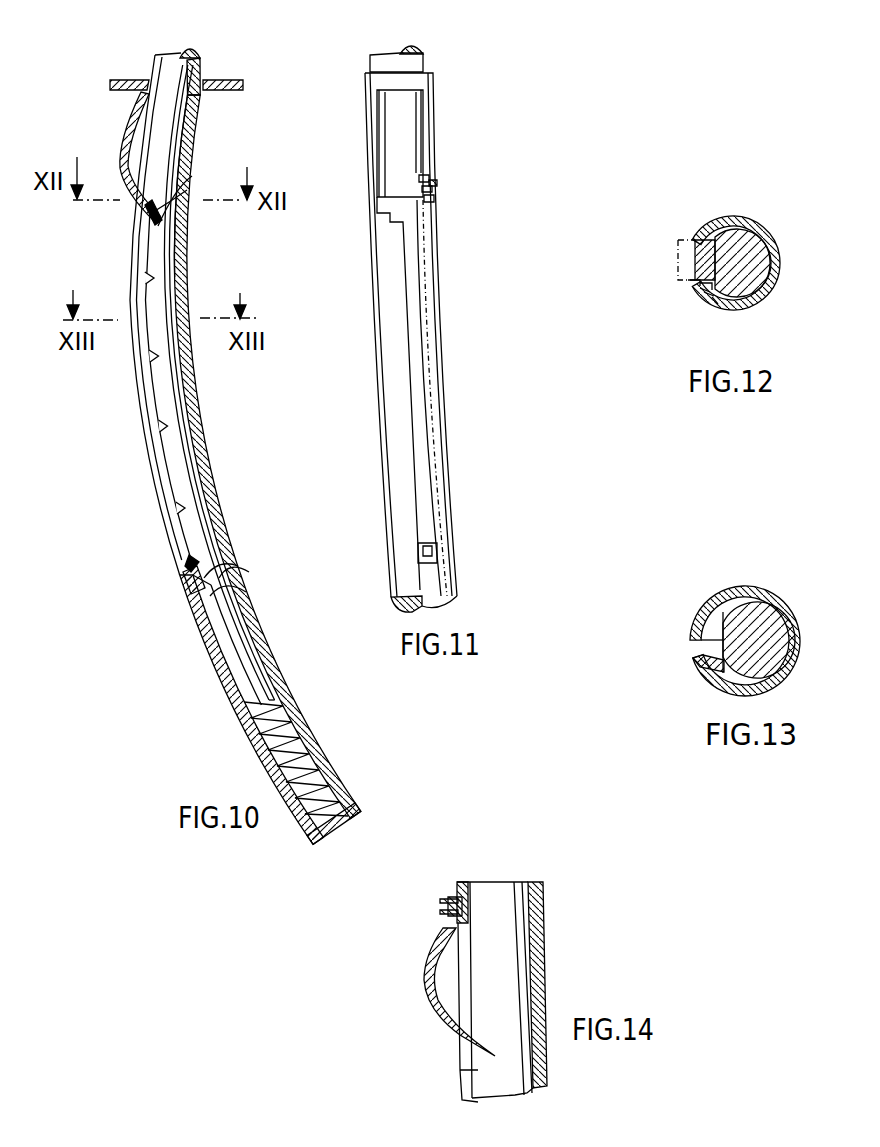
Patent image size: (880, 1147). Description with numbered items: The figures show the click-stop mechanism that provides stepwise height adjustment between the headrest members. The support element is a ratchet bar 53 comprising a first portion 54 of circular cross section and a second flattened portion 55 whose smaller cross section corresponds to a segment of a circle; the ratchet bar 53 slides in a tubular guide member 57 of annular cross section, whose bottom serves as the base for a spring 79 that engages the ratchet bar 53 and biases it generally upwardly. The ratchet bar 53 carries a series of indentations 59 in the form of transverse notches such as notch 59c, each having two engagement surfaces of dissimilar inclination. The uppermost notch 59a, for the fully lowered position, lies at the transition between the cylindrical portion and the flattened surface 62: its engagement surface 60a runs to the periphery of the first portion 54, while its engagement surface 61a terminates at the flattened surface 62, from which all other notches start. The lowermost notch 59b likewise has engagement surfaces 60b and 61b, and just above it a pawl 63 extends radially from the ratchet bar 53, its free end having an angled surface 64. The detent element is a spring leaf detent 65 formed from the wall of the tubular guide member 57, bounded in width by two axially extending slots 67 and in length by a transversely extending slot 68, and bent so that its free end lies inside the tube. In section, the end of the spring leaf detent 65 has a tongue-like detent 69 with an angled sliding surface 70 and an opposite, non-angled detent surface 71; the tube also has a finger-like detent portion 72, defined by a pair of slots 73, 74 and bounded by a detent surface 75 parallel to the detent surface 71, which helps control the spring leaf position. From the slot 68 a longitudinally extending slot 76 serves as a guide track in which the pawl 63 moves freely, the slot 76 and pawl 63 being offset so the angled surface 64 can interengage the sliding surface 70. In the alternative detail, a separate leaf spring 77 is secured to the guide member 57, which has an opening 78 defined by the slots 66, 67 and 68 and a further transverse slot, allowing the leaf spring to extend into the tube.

In FIG. 10, the ratchet bar 53 is at (150, 60).
In FIG. 11, the ratchet bar 53 is at (425, 60).
In FIG. 13, the ratchet bar 53 is at (706, 600).
In FIG. 10, the first portion 54 is at (170, 136).
In FIG. 10, the second flattened portion 55 is at (252, 661).
In FIG. 13, the second flattened portion 55 is at (755, 615).
In FIG. 10, the tubular guide member 57 is at (300, 718).
In FIG. 11, the tubular guide member 57 is at (392, 342).
In FIG. 14, the tubular guide member 57 is at (535, 912).
In FIG. 10, the indentations 59 is at (149, 427).
In FIG. 10, the uppermost notch 59a is at (175, 224).
In FIG. 10, the lowermost notch 59b is at (234, 568).
In FIG. 10, the notch 59c is at (175, 510).
In FIG. 10, the engagement surface 60a is at (192, 176).
In FIG. 10, the engagement surface 60b is at (204, 578).
In FIG. 10, the engagement surface 61a is at (178, 195).
In FIG. 10, the engagement surface 61b is at (210, 596).
In FIG. 10, the flattened surface 62 is at (217, 655).
In FIG. 13, the flattened surface 62 is at (714, 670).
In FIG. 10, the pawl 63 is at (192, 584).
In FIG. 11, the pawl 63 is at (437, 552).
In FIG. 10, the angled surface 64 is at (178, 556).
In FIG. 10, the spring leaf detent 65 is at (122, 168).
In FIG. 11, the spring leaf detent 65 is at (393, 142).
In FIG. 12, the spring leaf detent 65 is at (692, 254).
In FIG. 11, the slot 66 is at (378, 166).
In FIG. 11, the axially extending slots 67 is at (428, 141).
In FIG. 11, the transversely extending slot 68 is at (384, 213).
In FIG. 12, the tongue-like detent 69 is at (692, 283).
In FIG. 12, the sliding surface 70 is at (706, 296).
In FIG. 12, the detent surface 71 is at (713, 300).
In FIG. 11, the finger-like detent portion 72 is at (437, 182).
In FIG. 12, the finger-like detent portion 72 is at (703, 292).
In FIG. 11, the slot 73 is at (431, 175).
In FIG. 11, the slot 74 is at (436, 200).
In FIG. 11, the detent surface 75 is at (433, 188).
In FIG. 12, the detent surface 75 is at (700, 288).
In FIG. 11, the longitudinally extending slot 76 is at (430, 463).
In FIG. 13, the longitudinally extending slot 76 is at (698, 652).
In FIG. 14, the separate leaf spring 77 is at (423, 980).
In FIG. 14, the opening 78 is at (466, 982).
In FIG. 10, the spring 79 is at (325, 772).